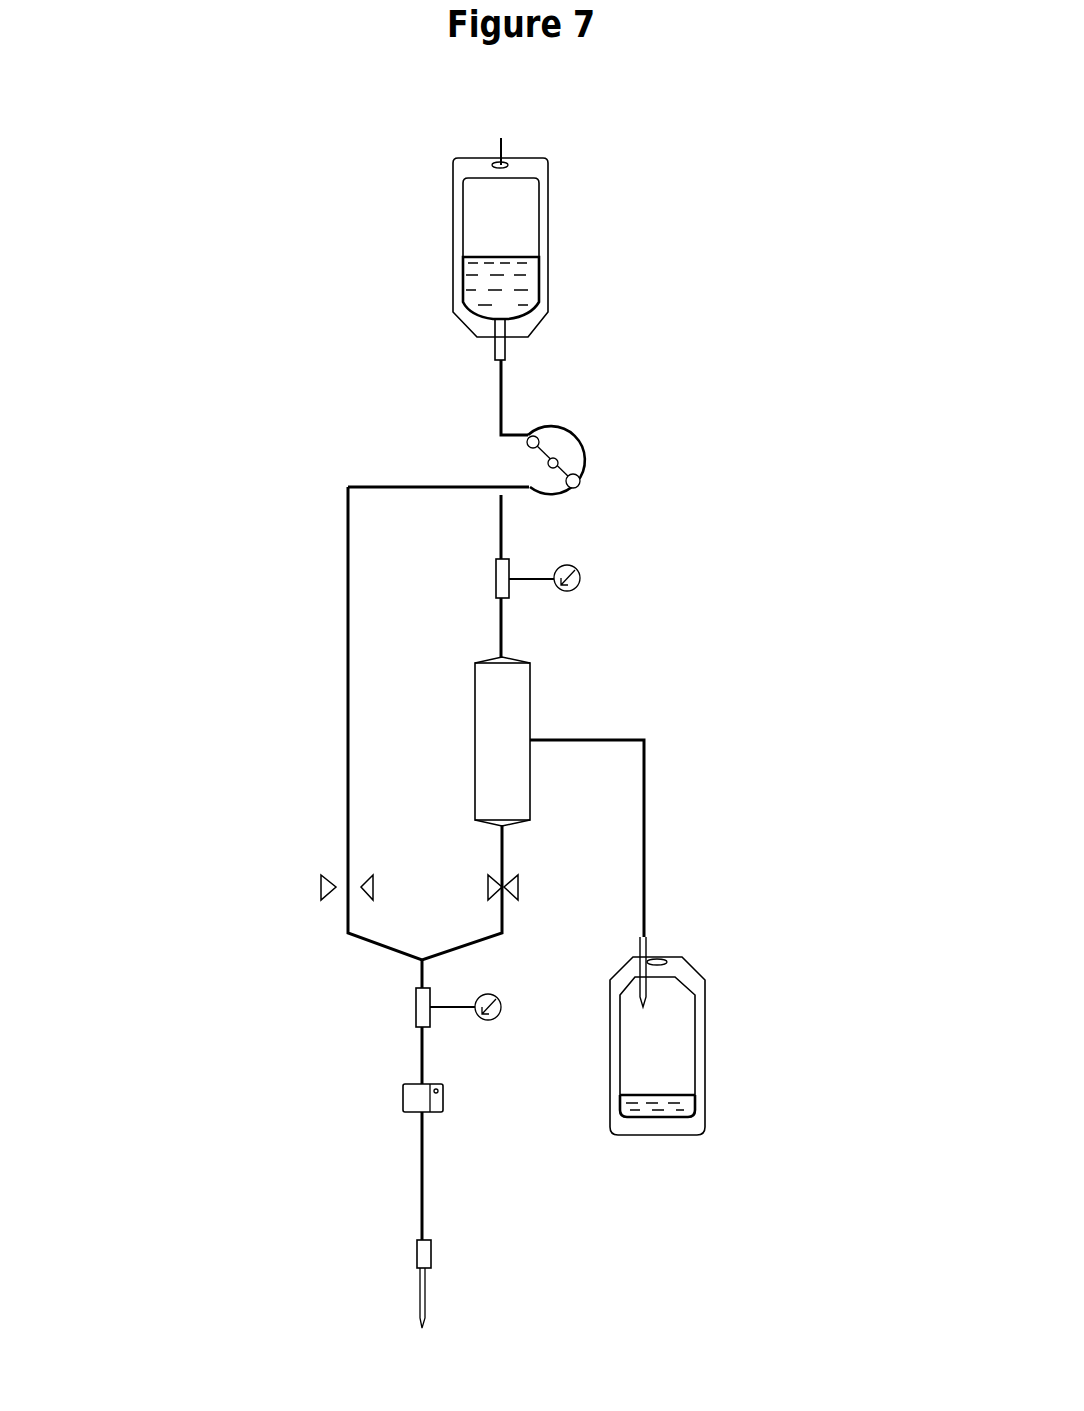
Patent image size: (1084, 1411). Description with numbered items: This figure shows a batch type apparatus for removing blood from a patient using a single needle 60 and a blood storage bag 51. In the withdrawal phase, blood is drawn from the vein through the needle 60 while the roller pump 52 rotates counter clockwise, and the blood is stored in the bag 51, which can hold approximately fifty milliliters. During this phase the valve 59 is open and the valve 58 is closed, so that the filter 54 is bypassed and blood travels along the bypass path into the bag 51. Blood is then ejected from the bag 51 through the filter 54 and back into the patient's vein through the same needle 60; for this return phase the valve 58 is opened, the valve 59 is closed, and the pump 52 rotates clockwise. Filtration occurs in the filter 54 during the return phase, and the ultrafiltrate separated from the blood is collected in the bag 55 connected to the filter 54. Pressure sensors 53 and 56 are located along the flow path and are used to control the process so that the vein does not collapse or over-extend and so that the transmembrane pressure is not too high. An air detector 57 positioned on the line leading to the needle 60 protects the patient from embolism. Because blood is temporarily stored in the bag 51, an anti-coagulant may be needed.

The bag 51 is at (512, 210).
The roller pump 52 is at (572, 445).
The pressure sensor 53 is at (570, 560).
The filter 54 is at (512, 717).
The bag 55 is at (683, 1007).
The pressure sensor 56 is at (493, 988).
The air detector 57 is at (454, 1087).
The valve 58 is at (490, 885).
The valve 59 is at (327, 875).
The needle 60 is at (437, 1277).